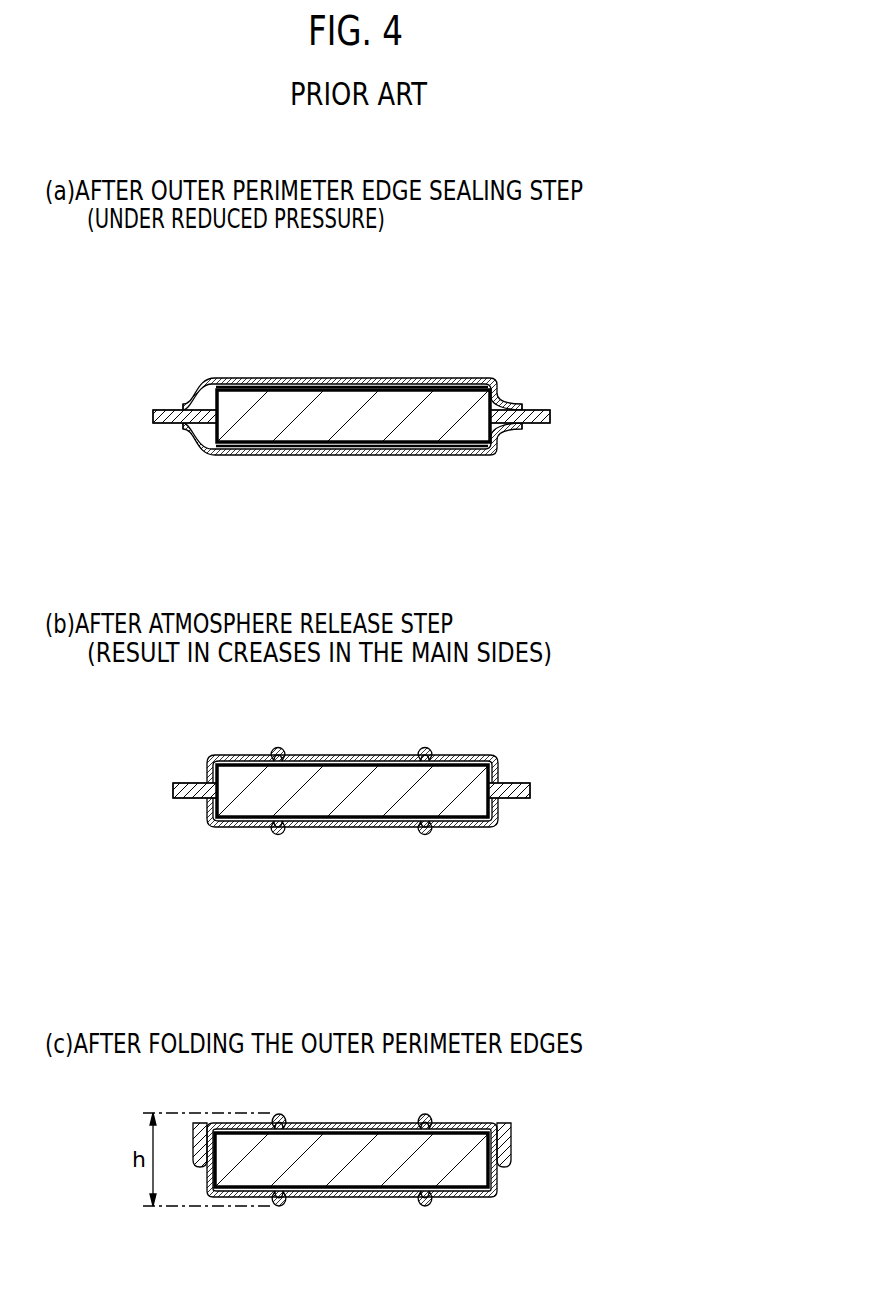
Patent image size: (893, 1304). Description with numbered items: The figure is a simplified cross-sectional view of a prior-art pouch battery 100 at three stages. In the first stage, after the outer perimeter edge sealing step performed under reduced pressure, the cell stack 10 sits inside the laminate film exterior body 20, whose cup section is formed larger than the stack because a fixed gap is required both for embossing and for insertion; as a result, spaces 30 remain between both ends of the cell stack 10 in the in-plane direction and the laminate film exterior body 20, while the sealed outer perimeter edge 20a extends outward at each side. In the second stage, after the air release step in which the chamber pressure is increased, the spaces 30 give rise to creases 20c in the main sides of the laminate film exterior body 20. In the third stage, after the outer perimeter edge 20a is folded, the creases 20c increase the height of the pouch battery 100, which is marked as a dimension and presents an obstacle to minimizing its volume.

The pouch battery 100 is at (451, 327).
The cell stack 10 is at (395, 406).
The laminate film exterior body 20 is at (283, 378).
The outer perimeter edge 20a is at (546, 408).
The creases 20c is at (281, 748).
The spaces 30 is at (200, 404).